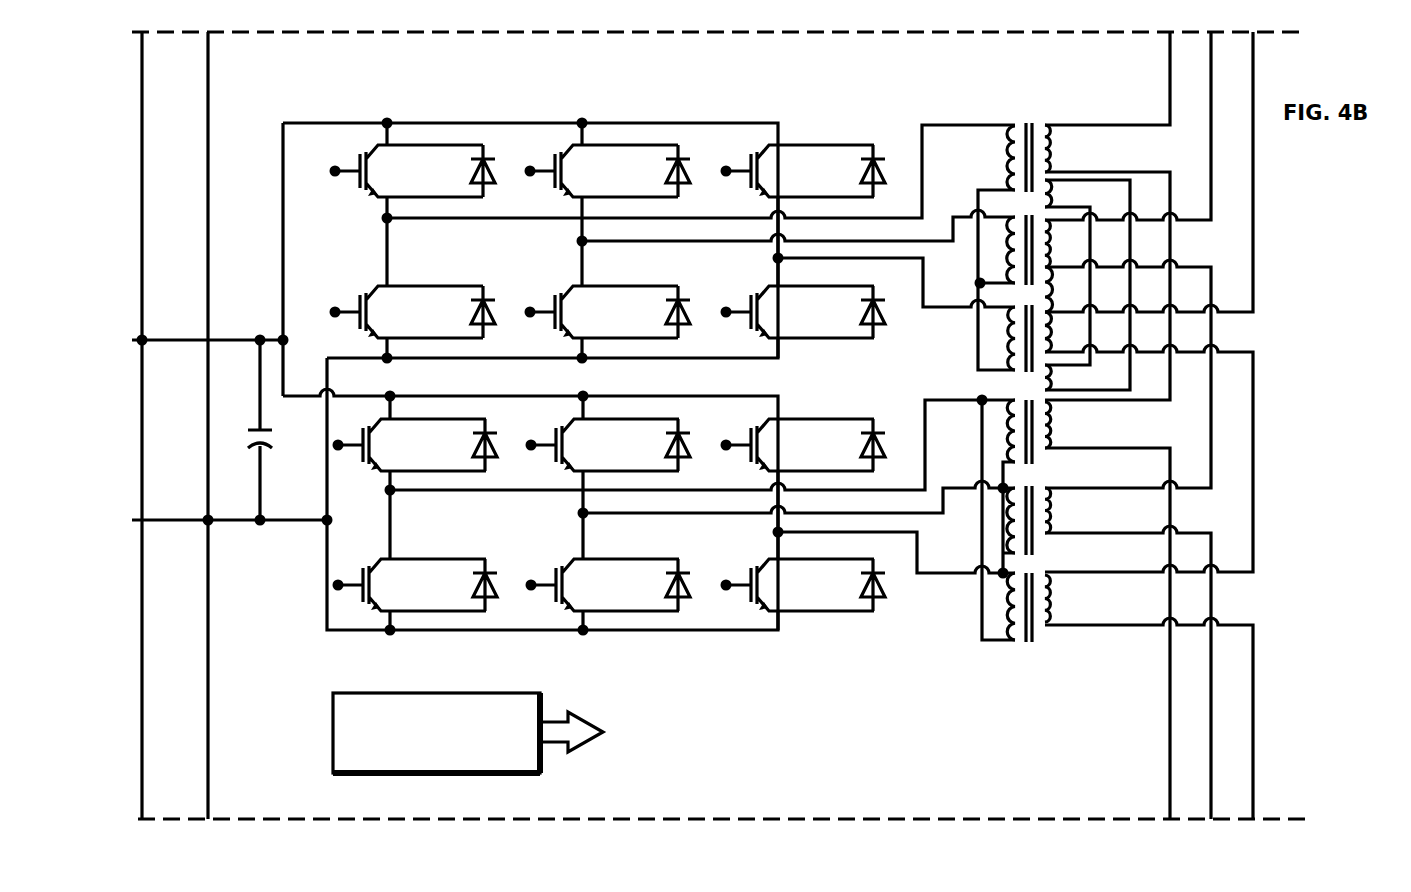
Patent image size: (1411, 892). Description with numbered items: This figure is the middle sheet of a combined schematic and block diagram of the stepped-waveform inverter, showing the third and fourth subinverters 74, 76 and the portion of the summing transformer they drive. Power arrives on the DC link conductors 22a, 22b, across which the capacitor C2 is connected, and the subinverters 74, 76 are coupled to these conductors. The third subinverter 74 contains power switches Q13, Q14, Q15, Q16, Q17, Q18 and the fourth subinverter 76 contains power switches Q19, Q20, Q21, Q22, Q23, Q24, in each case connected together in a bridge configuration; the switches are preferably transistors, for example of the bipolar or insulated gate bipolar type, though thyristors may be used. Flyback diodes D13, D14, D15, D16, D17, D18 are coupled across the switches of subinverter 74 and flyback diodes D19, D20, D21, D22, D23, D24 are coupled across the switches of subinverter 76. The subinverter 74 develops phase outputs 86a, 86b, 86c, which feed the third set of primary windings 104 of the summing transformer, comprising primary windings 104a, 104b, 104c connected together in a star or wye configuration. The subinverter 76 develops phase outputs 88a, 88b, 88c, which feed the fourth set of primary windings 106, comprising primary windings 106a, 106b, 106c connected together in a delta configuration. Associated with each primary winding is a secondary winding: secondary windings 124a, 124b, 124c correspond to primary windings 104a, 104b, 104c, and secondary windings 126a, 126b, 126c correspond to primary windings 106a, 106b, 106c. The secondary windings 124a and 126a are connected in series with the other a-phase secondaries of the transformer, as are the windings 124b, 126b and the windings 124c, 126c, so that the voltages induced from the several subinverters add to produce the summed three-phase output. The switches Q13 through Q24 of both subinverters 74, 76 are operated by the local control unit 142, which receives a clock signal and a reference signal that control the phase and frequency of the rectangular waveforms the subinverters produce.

The DC link conductor 22a is at (146, 345).
The DC link conductor 22b is at (150, 525).
The capacitor C2 is at (258, 426).
The third subinverter 74 is at (690, 362).
The fourth subinverter 76 is at (523, 393).
The power switch Q13 is at (363, 190).
The power switch Q14 is at (365, 288).
The power switch Q15 is at (556, 183).
The power switch Q16 is at (562, 290).
The power switch Q17 is at (772, 165).
The power switch Q18 is at (762, 292).
The power switch Q19 is at (380, 426).
The power switch Q20 is at (382, 558).
The power switch Q21 is at (567, 427).
The power switch Q22 is at (576, 558).
The power switch Q23 is at (764, 427).
The power switch Q24 is at (760, 558).
The flyback diode D13 is at (490, 161).
The flyback diode D14 is at (471, 312).
The flyback diode D15 is at (666, 172).
The flyback diode D16 is at (666, 310).
The flyback diode D17 is at (900, 128).
The flyback diode D18 is at (860, 310).
The flyback diode D19 is at (490, 449).
The flyback diode D20 is at (473, 587).
The flyback diode D21 is at (666, 444).
The flyback diode D22 is at (668, 587).
The flyback diode D23 is at (861, 445).
The flyback diode D24 is at (861, 585).
The phase output 86a is at (383, 222).
The phase output 86b is at (578, 242).
The phase output 86c is at (774, 258).
The phase output 88a is at (394, 494).
The phase output 88b is at (580, 513).
The phase output 88c is at (775, 534).
The third set of primary windings 104 is at (965, 312).
The primary winding 104a is at (1011, 146).
The primary winding 104b is at (1012, 258).
The primary winding 104c is at (1012, 340).
The fourth set of primary windings 106 is at (966, 394).
The primary winding 106a is at (1015, 445).
The primary winding 106b is at (1015, 510).
The primary winding 106c is at (1015, 595).
The secondary winding 124a is at (1048, 152).
The secondary winding 124b is at (1048, 243).
The secondary winding 124c is at (1048, 333).
The secondary winding 126a is at (1048, 420).
The secondary winding 126b is at (1048, 520).
The secondary winding 126c is at (1048, 608).
The local control unit 142 is at (333, 725).